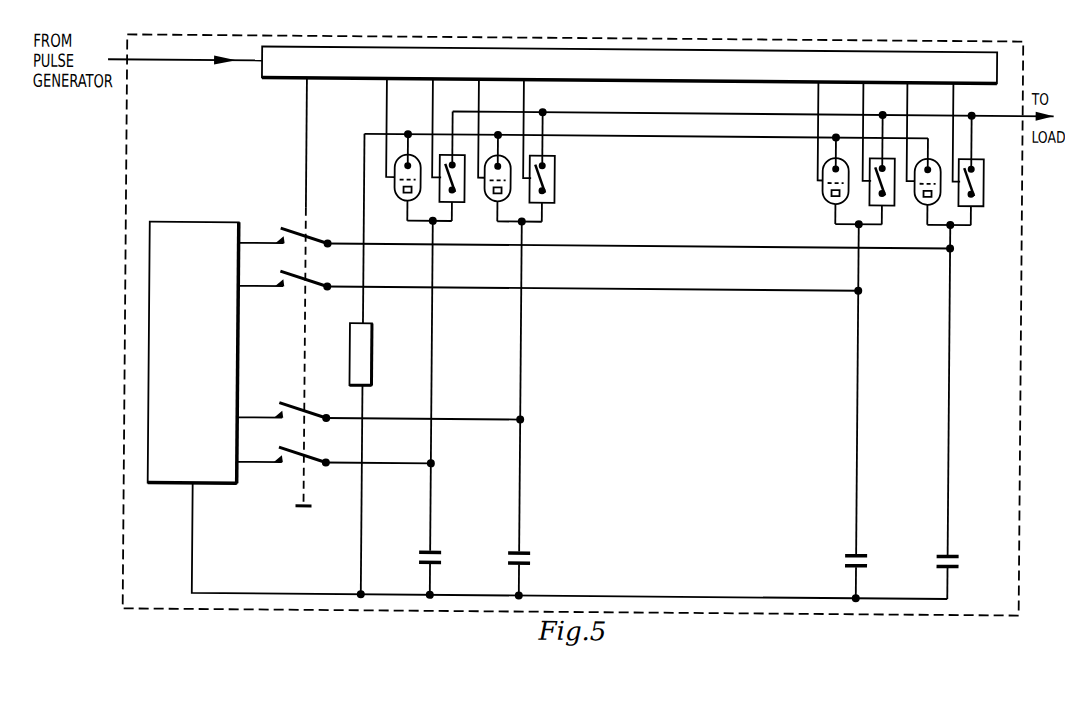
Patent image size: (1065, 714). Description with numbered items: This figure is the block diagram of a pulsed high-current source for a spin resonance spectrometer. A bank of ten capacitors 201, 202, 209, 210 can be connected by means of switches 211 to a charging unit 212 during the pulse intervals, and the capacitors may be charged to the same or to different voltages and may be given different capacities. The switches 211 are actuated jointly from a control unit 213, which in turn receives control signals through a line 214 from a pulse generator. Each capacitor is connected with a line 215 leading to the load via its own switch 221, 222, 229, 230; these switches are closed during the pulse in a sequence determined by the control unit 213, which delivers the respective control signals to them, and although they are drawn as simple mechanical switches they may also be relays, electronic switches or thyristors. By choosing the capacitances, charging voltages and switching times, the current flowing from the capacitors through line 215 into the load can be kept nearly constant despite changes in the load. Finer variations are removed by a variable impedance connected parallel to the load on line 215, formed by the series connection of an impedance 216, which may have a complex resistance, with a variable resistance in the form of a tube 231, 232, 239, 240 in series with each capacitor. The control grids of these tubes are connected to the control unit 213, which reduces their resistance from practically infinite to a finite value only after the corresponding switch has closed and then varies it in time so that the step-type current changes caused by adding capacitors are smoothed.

The capacitor 201 is at (437, 549).
The capacitor 202 is at (524, 549).
The capacitor 209 is at (851, 550).
The capacitor 210 is at (942, 550).
The switches 211 is at (297, 465).
The charging unit 212 is at (160, 480).
The control unit 213 is at (684, 80).
The line 214 is at (238, 65).
The line 215 is at (657, 136).
The impedance 216 is at (372, 347).
The switch 221 is at (455, 204).
The switch 222 is at (553, 204).
The switch 229 is at (868, 192).
The switch 230 is at (977, 205).
The tube 231 is at (394, 192).
The tube 232 is at (510, 168).
The tube 239 is at (822, 168).
The variable resistor 240 is at (916, 204).